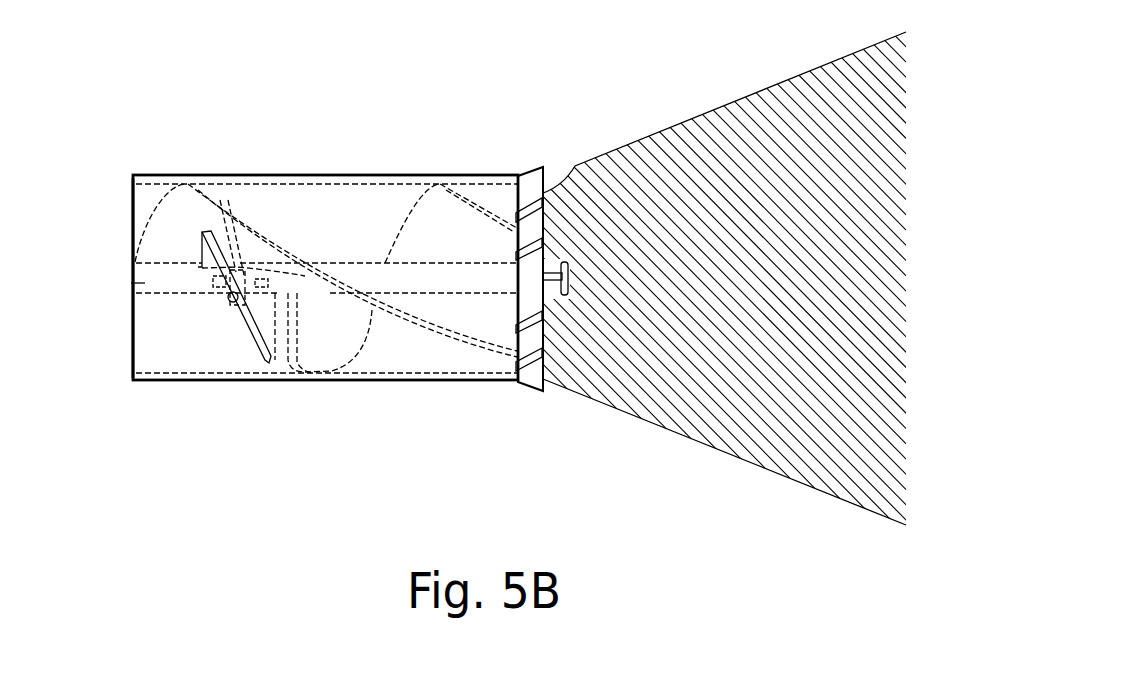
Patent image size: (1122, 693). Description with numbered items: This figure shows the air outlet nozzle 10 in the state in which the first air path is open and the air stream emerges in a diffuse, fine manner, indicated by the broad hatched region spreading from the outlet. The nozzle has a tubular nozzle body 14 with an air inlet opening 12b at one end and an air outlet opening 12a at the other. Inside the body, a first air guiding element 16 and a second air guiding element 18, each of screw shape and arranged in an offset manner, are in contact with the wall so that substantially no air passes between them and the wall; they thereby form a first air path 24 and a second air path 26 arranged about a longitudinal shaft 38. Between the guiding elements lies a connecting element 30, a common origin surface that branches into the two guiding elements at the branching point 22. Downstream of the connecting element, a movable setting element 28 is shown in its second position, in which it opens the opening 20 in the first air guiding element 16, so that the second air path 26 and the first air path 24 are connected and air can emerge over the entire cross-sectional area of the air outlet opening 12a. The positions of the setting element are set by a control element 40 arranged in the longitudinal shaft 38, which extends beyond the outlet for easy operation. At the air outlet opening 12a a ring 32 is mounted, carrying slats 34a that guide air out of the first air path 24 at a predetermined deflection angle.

The air outlet nozzle 10 is at (112, 141).
The air outlet opening 12a is at (560, 184).
The air inlet opening 12b is at (133, 212).
The tubular nozzle body 14 is at (308, 177).
The first air guiding element 16 is at (332, 347).
The second air guiding element 18 is at (477, 315).
The opening 20 is at (282, 348).
The branching point 22 is at (218, 208).
The first air path 24 is at (415, 347).
The second air path 26 is at (385, 188).
The movable setting element 28 is at (202, 250).
The connecting element 30 is at (182, 218).
The ring 32 is at (530, 177).
The slats 34a is at (532, 358).
The longitudinal shaft 38 is at (131, 283).
The control element 40 is at (578, 303).